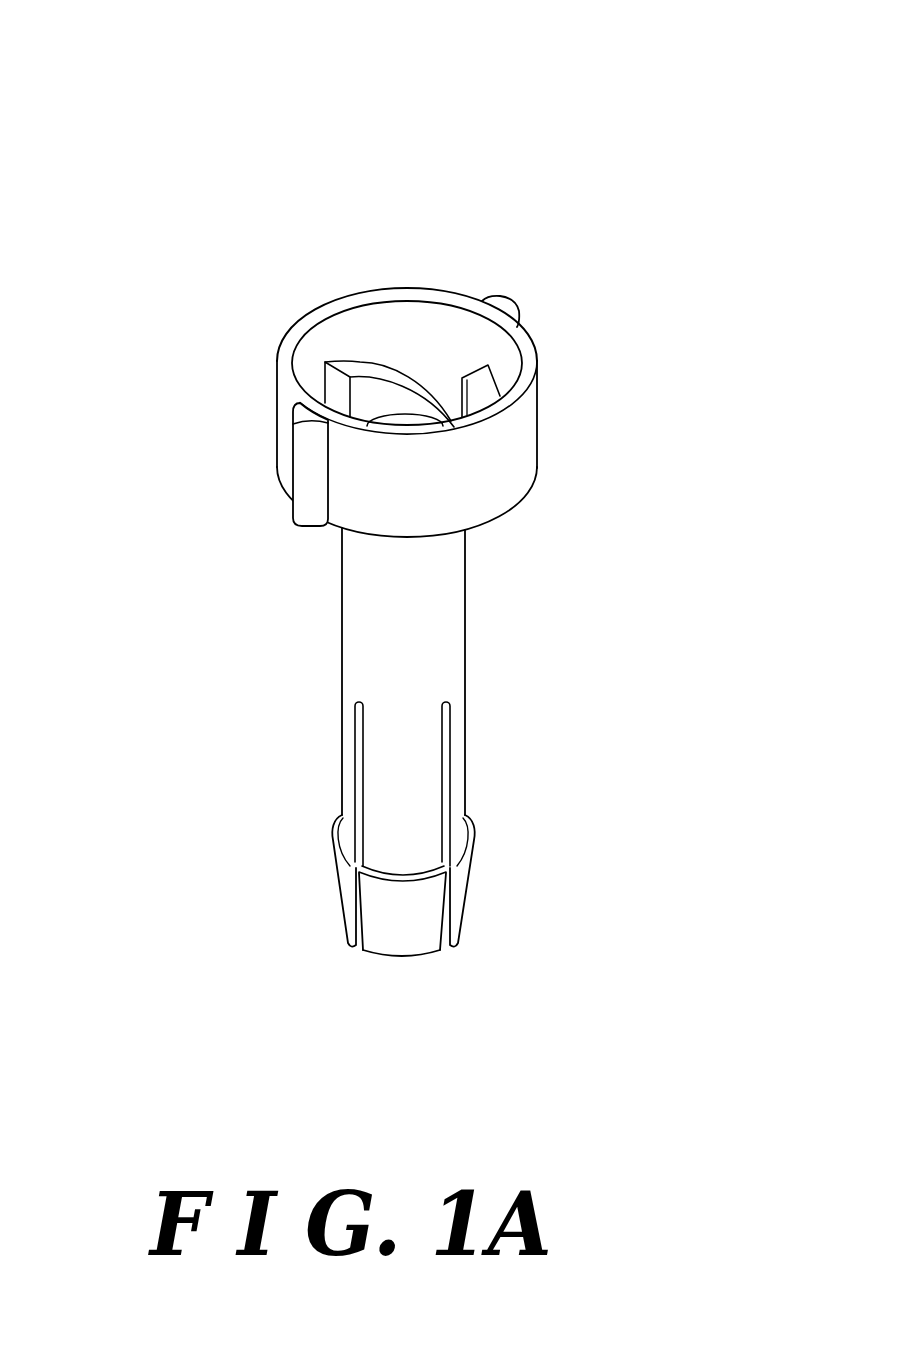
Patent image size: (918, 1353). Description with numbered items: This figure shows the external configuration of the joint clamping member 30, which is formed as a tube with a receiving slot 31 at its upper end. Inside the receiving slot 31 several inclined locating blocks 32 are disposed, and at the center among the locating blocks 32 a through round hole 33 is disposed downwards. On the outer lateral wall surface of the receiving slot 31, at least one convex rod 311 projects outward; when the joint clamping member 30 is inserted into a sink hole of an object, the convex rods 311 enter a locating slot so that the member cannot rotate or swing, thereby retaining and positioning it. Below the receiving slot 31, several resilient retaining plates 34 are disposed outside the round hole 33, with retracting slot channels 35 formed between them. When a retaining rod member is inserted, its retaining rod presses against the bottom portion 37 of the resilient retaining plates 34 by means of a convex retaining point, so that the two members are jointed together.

The joint clamping member 30 is at (500, 278).
The receiving slot 31 is at (347, 350).
The convex rod 311 is at (520, 305).
The locating block 32 is at (483, 388).
The through round hole 33 is at (407, 427).
The resilient retaining plate 34 is at (393, 835).
The retracting slot channel 35 is at (443, 779).
The bottom portion 37 is at (425, 957).